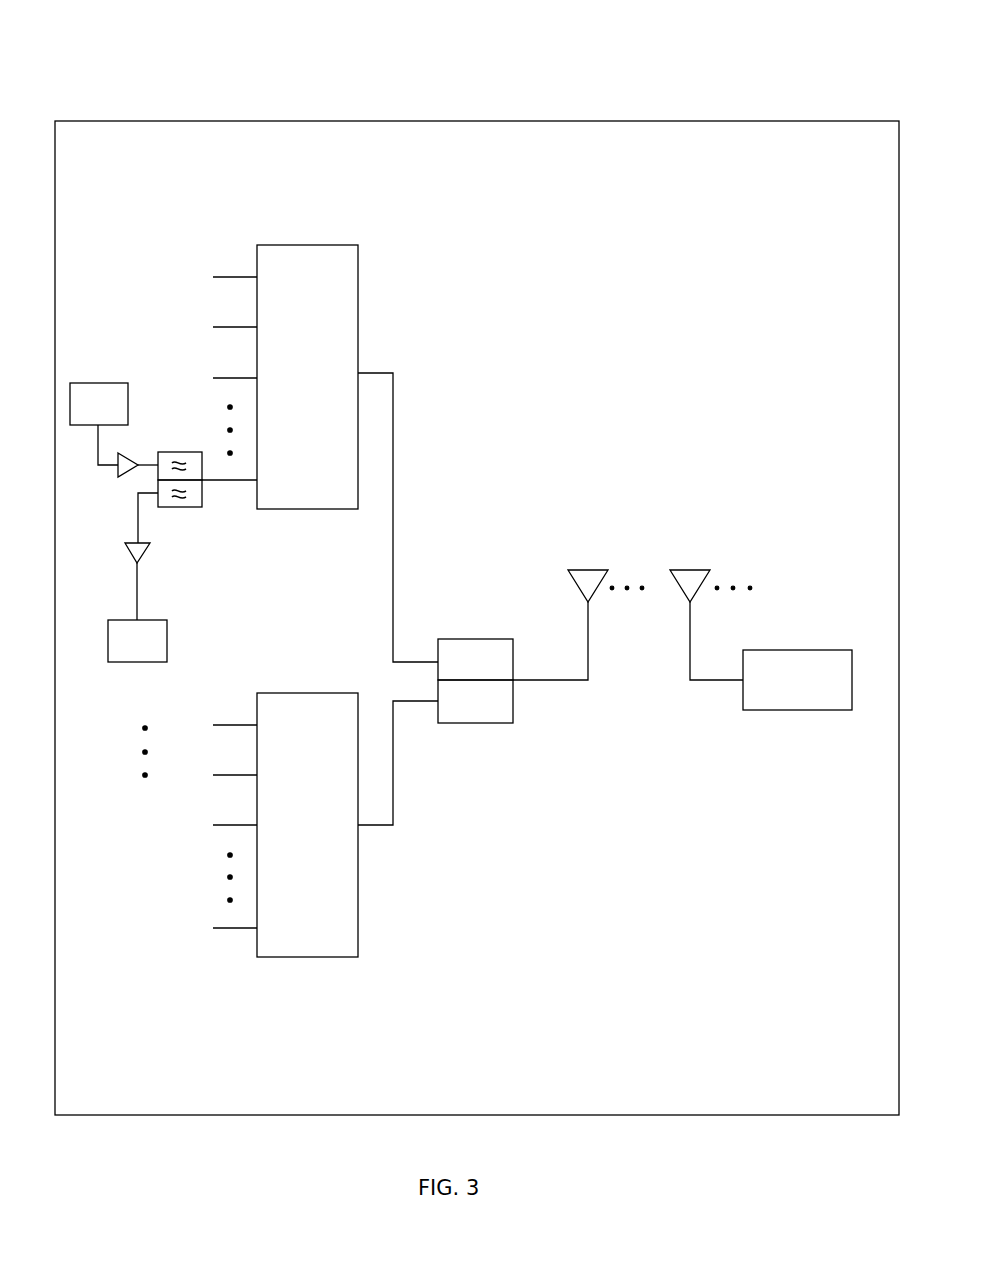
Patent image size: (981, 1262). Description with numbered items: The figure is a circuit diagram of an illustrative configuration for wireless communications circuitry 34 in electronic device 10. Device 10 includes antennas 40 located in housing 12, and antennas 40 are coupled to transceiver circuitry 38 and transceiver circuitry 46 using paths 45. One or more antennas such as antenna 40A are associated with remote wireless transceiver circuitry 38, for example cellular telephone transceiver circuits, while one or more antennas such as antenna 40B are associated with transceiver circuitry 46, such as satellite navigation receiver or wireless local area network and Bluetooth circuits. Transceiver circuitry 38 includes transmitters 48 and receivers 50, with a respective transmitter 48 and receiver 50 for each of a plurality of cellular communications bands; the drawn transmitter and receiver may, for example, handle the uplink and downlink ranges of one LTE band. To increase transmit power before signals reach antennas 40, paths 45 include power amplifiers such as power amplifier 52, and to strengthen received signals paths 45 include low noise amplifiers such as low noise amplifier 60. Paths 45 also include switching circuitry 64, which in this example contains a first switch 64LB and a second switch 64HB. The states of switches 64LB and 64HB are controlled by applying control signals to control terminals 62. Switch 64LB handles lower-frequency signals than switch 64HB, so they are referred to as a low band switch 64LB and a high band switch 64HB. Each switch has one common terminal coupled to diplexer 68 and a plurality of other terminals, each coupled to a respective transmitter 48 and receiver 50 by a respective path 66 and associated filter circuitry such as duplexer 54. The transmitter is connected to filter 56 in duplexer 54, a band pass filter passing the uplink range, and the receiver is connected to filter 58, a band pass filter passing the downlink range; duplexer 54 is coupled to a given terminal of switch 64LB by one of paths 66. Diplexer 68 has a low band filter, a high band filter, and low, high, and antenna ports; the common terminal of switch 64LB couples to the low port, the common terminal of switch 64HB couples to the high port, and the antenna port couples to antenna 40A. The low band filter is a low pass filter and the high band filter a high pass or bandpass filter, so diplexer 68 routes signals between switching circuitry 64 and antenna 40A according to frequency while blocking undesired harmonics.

The electronic device 10 is at (742, 43).
The housing 12 is at (817, 121).
The wireless communications circuitry 34 is at (737, 260).
The transceiver circuitry 38 is at (168, 793).
The antennas 40 is at (762, 515).
The antenna 40A is at (577, 587).
The antenna 40B is at (702, 587).
The paths 45 is at (198, 1008).
The transceiver circuitry 46 is at (797, 710).
The transmitter 48 is at (92, 383).
The receiver 50 is at (155, 662).
The power amplifier 52 is at (124, 477).
The duplexer 54 is at (197, 487).
The filter 56 is at (178, 452).
The filter 58 is at (200, 508).
The low noise amplifier 60 is at (130, 552).
The control terminals 62 is at (307, 512).
The switching circuitry 64 is at (422, 191).
The low band switch 64LB is at (312, 245).
The high band switch 64HB is at (327, 957).
The paths 66 is at (233, 277).
The diplexer 68 is at (468, 740).